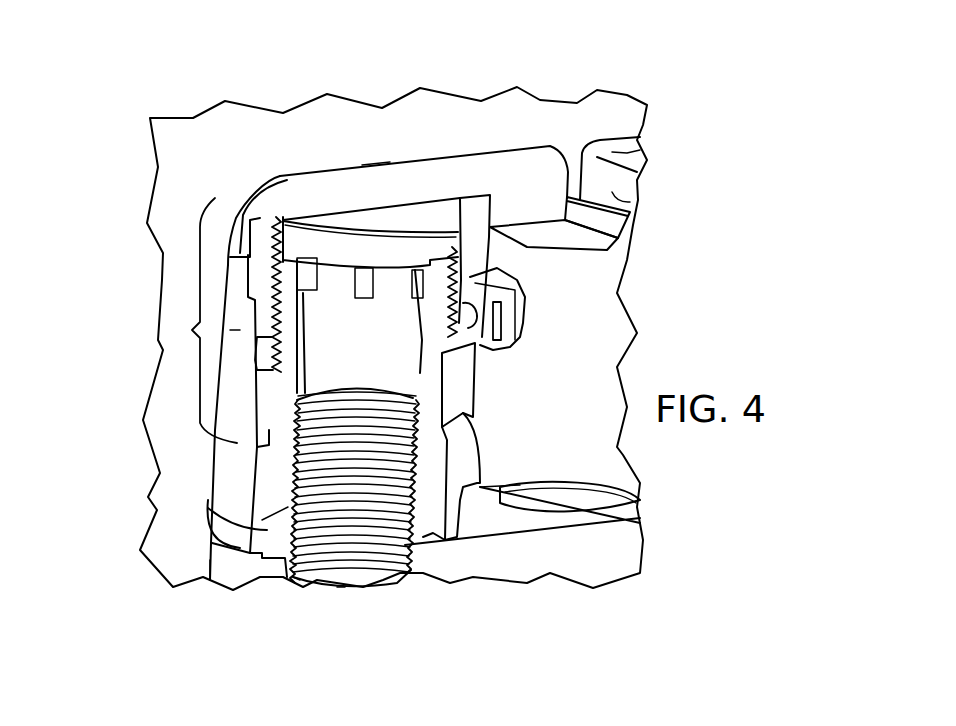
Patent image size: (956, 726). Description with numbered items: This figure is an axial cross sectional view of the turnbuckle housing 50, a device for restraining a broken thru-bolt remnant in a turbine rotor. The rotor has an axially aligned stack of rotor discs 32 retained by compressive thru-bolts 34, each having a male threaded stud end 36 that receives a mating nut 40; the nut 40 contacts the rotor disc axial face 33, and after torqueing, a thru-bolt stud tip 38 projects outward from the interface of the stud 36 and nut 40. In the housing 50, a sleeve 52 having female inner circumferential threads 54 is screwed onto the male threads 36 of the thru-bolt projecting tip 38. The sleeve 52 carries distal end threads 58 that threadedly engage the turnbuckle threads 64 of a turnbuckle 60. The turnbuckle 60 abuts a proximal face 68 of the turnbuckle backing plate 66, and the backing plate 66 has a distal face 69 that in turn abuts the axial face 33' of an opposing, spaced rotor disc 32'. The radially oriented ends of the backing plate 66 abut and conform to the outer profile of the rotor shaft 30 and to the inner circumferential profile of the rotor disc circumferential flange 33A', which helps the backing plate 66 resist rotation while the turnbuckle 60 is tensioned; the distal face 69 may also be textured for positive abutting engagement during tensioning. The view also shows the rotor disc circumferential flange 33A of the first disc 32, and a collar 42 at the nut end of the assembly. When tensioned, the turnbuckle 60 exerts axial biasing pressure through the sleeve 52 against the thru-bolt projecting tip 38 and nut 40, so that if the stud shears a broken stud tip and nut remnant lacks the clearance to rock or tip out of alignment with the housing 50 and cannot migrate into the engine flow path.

The rotor shaft 30 is at (235, 332).
The rotor disc 32 is at (393, 368).
The opposing spaced rotor disc 32' is at (590, 120).
The rotor disc axial face 33 is at (591, 513).
The axial face of opposing rotor disc 33' is at (700, 110).
The rotor disc circumferential flange 33A is at (518, 465).
The rotor disc circumferential flange 33A' is at (667, 202).
The thru-bolt 34 is at (342, 585).
The male threaded stud end 36 is at (300, 580).
The thru-bolt stud tip 38 is at (337, 433).
The nut 40 is at (210, 580).
The collar 42 is at (292, 443).
The turnbuckle housing 50 is at (192, 330).
The sleeve 52 is at (457, 397).
The female inner circumferential threads 54 is at (288, 507).
The distal end threads 58 is at (273, 220).
The turnbuckle 60 is at (527, 335).
The turnbuckle threads 64 is at (230, 253).
The turnbuckle backing plate 66 is at (480, 170).
The proximal face 68 is at (390, 223).
The distal face 69 is at (372, 164).